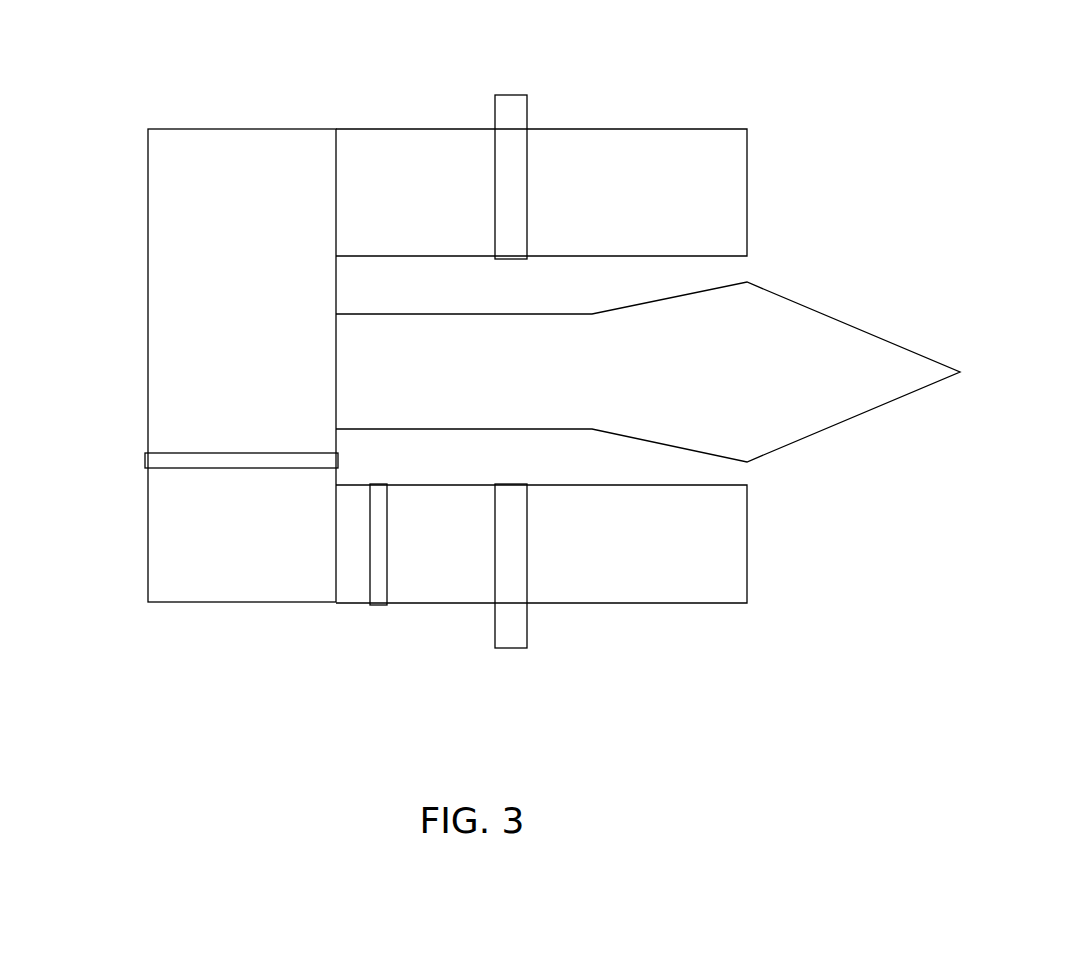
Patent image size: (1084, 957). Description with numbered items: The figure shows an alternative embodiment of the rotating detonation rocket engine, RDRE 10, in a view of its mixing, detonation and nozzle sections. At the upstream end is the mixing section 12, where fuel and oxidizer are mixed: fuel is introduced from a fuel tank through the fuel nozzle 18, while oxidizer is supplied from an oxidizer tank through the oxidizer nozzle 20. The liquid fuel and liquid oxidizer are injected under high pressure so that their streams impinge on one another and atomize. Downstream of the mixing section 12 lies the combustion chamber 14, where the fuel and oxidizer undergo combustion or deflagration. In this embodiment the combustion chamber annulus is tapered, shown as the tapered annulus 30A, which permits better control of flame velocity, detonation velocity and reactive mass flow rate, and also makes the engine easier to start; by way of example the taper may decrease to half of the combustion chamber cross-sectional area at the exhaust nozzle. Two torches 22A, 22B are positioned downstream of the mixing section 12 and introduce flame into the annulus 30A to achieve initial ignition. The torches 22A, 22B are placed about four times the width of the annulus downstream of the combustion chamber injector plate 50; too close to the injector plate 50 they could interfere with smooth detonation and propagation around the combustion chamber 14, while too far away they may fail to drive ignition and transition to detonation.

The RDRE 10 is at (962, 618).
The mixing section 12 is at (335, 618).
The combustion chamber 14 is at (475, 672).
The fuel nozzle 18 is at (370, 545).
The oxidizer nozzle 20 is at (241, 470).
The torch 22A is at (510, 95).
The torch 22B is at (527, 625).
The tapered combustion chamber annulus 30A is at (634, 283).
The combustion chamber injector plate 50 is at (180, 247).